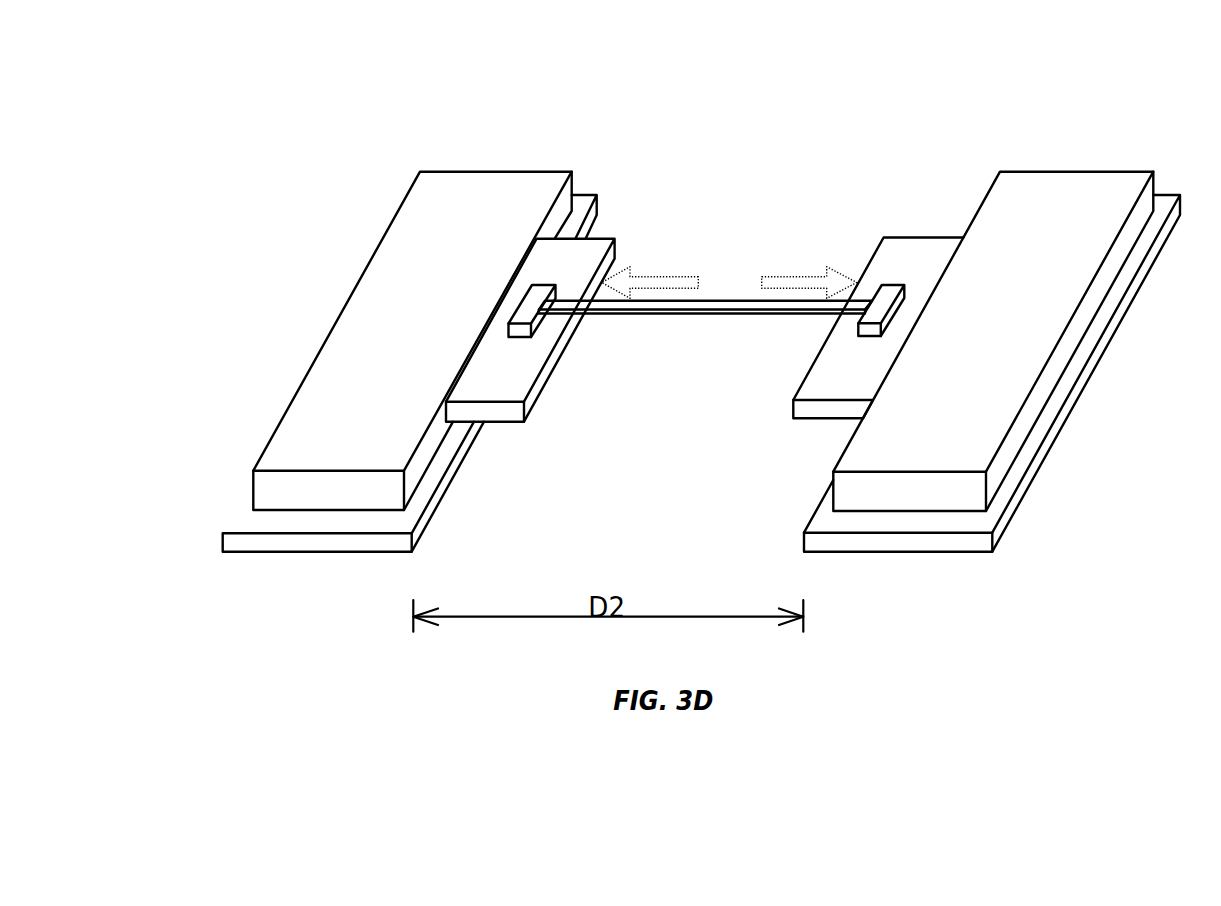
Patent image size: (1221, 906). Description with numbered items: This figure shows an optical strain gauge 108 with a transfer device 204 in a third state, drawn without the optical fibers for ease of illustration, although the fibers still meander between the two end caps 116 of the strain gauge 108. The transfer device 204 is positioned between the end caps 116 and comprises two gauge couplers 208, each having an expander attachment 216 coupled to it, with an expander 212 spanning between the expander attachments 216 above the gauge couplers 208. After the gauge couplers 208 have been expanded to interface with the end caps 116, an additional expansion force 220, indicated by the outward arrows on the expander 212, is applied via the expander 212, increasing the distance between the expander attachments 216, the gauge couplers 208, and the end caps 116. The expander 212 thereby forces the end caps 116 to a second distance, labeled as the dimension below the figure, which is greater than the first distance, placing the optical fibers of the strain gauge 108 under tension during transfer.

The optical strain gauge 108 is at (302, 138).
The end caps 116 is at (520, 184).
The transfer device 204 is at (723, 301).
The gauge couplers 208 is at (498, 408).
The expander 212 is at (717, 308).
The expander attachments 216 is at (557, 292).
The expansion force 220 is at (660, 278).